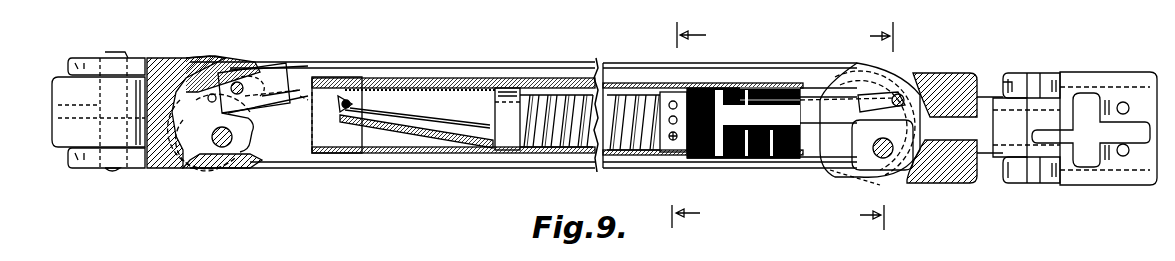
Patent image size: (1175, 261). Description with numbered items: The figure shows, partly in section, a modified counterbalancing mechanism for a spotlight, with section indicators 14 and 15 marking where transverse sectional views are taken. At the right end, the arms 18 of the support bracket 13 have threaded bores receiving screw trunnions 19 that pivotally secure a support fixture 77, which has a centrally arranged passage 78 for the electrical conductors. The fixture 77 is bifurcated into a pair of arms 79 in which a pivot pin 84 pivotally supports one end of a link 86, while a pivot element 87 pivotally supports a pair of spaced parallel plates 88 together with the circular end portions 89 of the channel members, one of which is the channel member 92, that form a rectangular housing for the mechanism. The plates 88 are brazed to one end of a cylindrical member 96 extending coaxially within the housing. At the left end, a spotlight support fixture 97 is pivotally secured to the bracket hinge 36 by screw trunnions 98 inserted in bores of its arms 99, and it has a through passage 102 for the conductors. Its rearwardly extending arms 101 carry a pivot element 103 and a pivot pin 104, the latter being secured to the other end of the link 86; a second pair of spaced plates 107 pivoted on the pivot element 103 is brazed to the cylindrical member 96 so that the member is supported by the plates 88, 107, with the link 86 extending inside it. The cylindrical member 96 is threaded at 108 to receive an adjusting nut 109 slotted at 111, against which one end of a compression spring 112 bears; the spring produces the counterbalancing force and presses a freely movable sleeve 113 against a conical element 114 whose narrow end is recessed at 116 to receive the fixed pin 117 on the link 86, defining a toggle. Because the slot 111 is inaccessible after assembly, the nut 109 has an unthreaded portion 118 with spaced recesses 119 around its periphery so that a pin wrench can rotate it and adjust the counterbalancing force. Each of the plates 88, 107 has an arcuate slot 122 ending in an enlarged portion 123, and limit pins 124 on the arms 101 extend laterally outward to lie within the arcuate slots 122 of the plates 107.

The support bracket 13 is at (1120, 58).
The section line 14 is at (859, 127).
The section line 15 is at (704, 125).
The arms 18 is at (1093, 176).
The screw trunnions 19 is at (1047, 72).
The bracket hinge 36 is at (66, 127).
The support fixture 77 is at (955, 74).
The centrally arranged passage 78 is at (974, 125).
The arms 79 is at (868, 155).
The pivot pin 84 is at (900, 93).
The link 86 is at (299, 97).
The pivot element 87 is at (885, 146).
The spaced parallel plates 88 is at (815, 160).
The circular end portions 89 is at (896, 176).
The channel member 92 is at (594, 62).
The cylindrical member 96 is at (767, 88).
The spotlight support fixture 97 is at (178, 60).
The screw trunnions 98 is at (111, 56).
The arms 99 is at (96, 162).
The rearwardly extending arms 101 is at (245, 132).
The through passage 102 is at (190, 164).
The pivot element 103 is at (222, 148).
The pivot pin 104 is at (242, 83).
The spaced plates 107 is at (296, 158).
The threaded portion 108 is at (741, 161).
The adjusting nut 109 is at (710, 86).
The slot 111 is at (733, 120).
The compression spring 112 is at (557, 152).
The freely movable sleeve 113 is at (496, 110).
The conical element 114 is at (352, 122).
The recess 116 is at (352, 104).
The fixed pin 117 is at (338, 75).
The unthreaded portion 118 is at (668, 108).
The spaced recesses 119 is at (668, 160).
The arcuate slot 122 is at (209, 103).
The enlarged portion 123 is at (280, 68).
The limit pins 124 is at (213, 93).